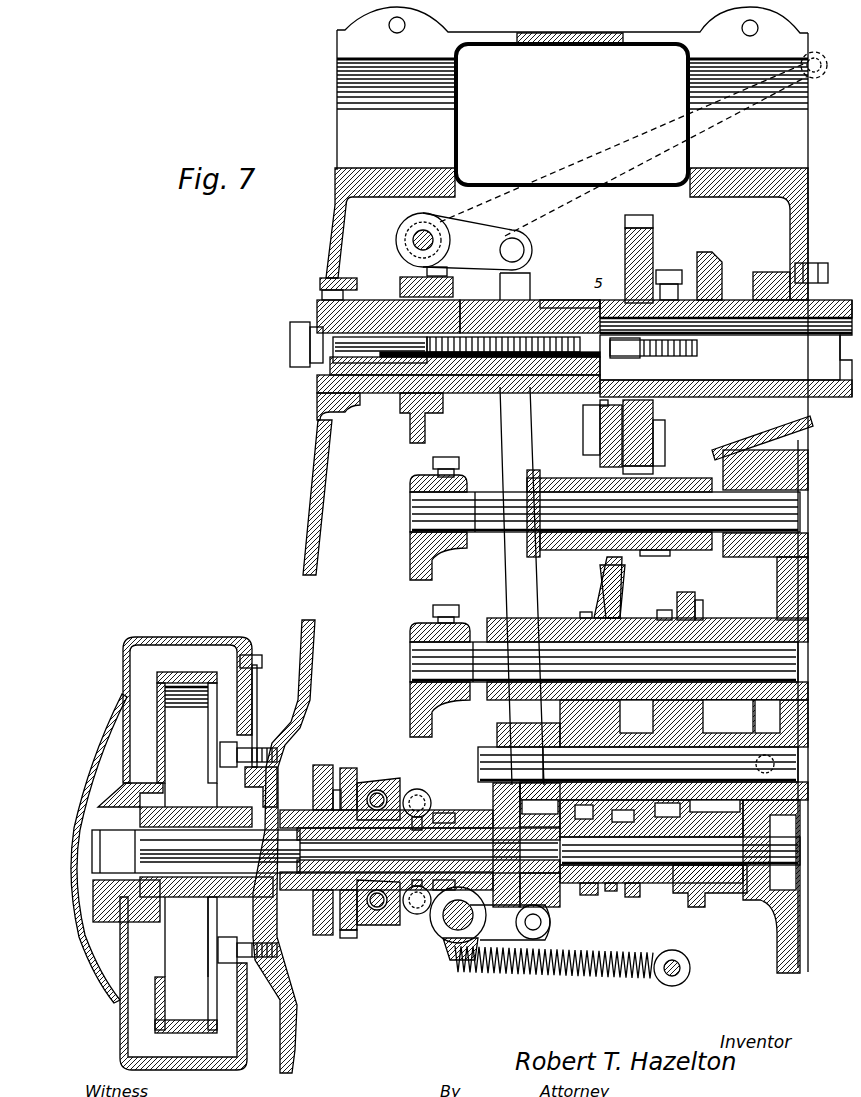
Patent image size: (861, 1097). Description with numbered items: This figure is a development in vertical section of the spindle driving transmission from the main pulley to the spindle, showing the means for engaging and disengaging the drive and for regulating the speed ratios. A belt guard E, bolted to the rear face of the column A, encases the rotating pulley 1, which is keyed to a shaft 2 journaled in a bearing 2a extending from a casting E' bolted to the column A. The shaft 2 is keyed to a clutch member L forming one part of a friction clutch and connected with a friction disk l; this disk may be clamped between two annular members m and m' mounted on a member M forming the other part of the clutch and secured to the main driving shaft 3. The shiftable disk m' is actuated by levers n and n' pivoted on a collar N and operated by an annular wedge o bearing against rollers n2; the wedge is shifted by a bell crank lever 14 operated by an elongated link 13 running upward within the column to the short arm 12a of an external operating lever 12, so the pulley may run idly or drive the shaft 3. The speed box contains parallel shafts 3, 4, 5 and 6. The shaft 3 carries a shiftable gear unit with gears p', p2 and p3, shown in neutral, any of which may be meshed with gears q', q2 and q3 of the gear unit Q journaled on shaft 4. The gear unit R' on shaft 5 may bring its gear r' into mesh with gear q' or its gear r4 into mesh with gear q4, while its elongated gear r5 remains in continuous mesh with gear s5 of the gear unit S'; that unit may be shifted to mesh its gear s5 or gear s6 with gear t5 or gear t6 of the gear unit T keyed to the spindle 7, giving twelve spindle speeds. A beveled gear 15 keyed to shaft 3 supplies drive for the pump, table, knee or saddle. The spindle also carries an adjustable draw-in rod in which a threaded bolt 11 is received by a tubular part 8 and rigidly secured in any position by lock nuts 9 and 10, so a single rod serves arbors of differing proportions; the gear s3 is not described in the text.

The pulley 1 is at (157, 717).
The shaft 2 is at (196, 851).
The bearing 2a is at (197, 808).
The main driving shaft 3 is at (680, 851).
The shaft 4 is at (638, 764).
The shaft 5 is at (604, 662).
The shaft 6 is at (605, 512).
The spindle 7 is at (726, 348).
The tubular part 8 is at (395, 362).
The lock nut 9 is at (525, 335).
The lock nut 10 is at (556, 300).
The threaded bolt 11 is at (652, 360).
The operating lever 12 is at (575, 160).
The short arm 12a is at (490, 248).
The elongated link 13 is at (505, 432).
The bell crank lever 14 is at (480, 916).
The beveled gear 15 is at (710, 893).
The column A is at (318, 660).
The belt guard E is at (186, 840).
The casting E' is at (256, 711).
The clutch member L is at (292, 808).
The clutch member M is at (295, 890).
The collar N is at (395, 925).
The gear unit Q is at (643, 748).
The gear unit R' is at (709, 610).
The gear unit S' is at (587, 587).
The gear unit T is at (653, 425).
The friction disk l is at (335, 765).
The annular member m is at (317, 786).
The shiftable disk m' is at (358, 841).
The lever n is at (379, 790).
The lever n' is at (357, 939).
The rollers n2 is at (422, 792).
The annular wedge o is at (445, 812).
The gear p' is at (637, 895).
The gear p2 is at (606, 880).
The gear p3 is at (612, 895).
The gear q' is at (637, 716).
The gear q2 is at (548, 792).
The gear q3 is at (615, 809).
The gear q4 is at (722, 732).
The gear r' is at (662, 604).
The gear r4 is at (695, 596).
The elongated gear r5 is at (586, 616).
The shifter fork s3 is at (617, 591).
The gear s5 is at (605, 412).
The gear s6 is at (660, 562).
The gear t5 is at (575, 420).
The gear t6 is at (655, 455).